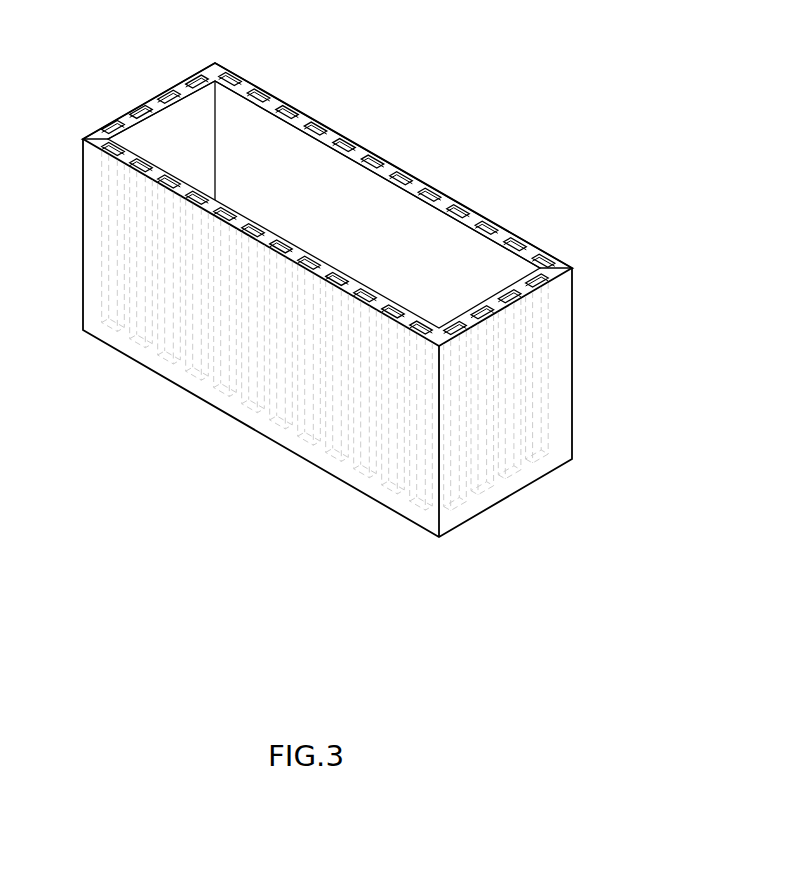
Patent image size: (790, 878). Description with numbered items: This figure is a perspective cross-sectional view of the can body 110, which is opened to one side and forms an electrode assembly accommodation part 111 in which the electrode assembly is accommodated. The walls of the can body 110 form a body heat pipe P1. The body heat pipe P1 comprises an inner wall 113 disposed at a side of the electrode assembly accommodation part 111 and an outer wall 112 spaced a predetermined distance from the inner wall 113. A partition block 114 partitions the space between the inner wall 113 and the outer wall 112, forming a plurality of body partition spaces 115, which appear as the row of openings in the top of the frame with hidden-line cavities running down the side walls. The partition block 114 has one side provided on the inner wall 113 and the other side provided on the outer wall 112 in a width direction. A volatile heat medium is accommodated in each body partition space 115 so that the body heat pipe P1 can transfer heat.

The can body 110 is at (608, 275).
The electrode assembly accommodation part 111 is at (446, 271).
The outer wall 112 is at (254, 92).
The inner wall 113 is at (262, 90).
The partition block 114 is at (385, 168).
The body partition space 115 is at (108, 150).
The body heat pipe P1 is at (274, 95).